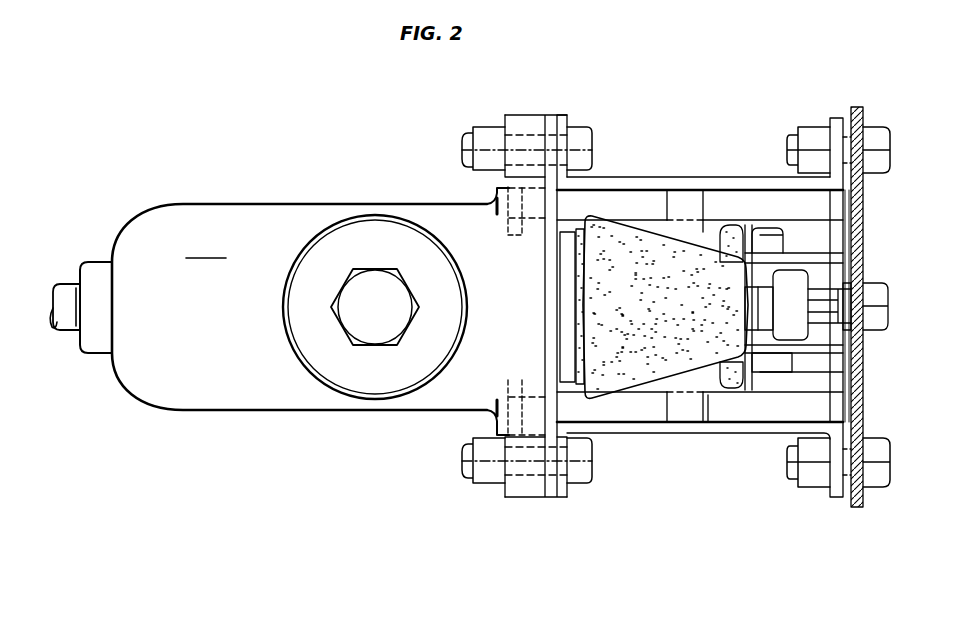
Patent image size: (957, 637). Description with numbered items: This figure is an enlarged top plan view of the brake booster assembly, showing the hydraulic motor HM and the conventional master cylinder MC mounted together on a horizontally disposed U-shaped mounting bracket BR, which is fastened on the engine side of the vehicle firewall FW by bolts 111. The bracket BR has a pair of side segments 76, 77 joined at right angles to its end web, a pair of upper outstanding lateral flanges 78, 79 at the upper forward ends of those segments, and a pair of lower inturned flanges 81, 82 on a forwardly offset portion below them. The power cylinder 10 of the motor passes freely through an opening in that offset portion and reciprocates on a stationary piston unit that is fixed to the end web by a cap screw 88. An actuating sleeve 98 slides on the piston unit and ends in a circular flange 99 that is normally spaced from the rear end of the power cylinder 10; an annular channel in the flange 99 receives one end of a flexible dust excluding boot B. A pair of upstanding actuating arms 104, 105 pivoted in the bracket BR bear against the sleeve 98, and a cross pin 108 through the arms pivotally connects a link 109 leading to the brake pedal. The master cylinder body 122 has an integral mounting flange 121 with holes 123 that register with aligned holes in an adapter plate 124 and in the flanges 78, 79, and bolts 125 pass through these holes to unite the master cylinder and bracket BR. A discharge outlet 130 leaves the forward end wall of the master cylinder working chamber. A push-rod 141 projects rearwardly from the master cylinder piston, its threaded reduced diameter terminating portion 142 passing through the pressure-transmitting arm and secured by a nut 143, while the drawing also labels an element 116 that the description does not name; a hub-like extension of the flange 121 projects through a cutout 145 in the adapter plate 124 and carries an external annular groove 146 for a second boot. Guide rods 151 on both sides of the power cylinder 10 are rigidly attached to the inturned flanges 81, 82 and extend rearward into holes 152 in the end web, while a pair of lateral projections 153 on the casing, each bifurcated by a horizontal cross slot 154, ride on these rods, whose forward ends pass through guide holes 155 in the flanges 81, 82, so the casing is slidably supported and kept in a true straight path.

The power cylinder 10 is at (707, 375).
The side segment 76 is at (617, 339).
The side segment 77 is at (688, 190).
The upper outstanding lateral flange 78 is at (560, 500).
The upper outstanding lateral flange 79 is at (568, 118).
The lower inturned flange 81 is at (497, 421).
The lower inturned flange 82 is at (497, 190).
The cap screw 88 is at (865, 292).
The actuating sleeve 98 is at (830, 258).
The circular flange 99 is at (748, 372).
The actuating arm 104 is at (825, 350).
The actuating arm 105 is at (848, 228).
The cross pin 108 is at (792, 372).
The link 109 is at (882, 312).
The bolt 111 is at (820, 482).
The sleeve 116 is at (795, 333).
The mounting flange 121 is at (515, 490).
The master cylinder body 122 is at (233, 410).
The hole 123 is at (518, 140).
The adapter plate 124 is at (565, 296).
The bolt 125 is at (583, 477).
The discharge outlet 130 is at (72, 330).
The push-rod 141 is at (785, 250).
The reduced diameter terminating portion 142 is at (835, 290).
The nut 143 is at (800, 330).
The cutout 145 is at (578, 273).
The external annular groove 146 is at (590, 325).
The guide rod 151 is at (620, 193).
The hole 152 is at (845, 425).
The lateral projection 153 is at (690, 192).
The horizontal cross slot 154 is at (698, 372).
The guide hole 155 is at (497, 214).
The master cylinder MC is at (206, 247).
The mounting bracket BR is at (770, 178).
The hydraulic motor HM is at (718, 229).
The firewall FW is at (863, 500).
The dust excluding boot B is at (737, 383).